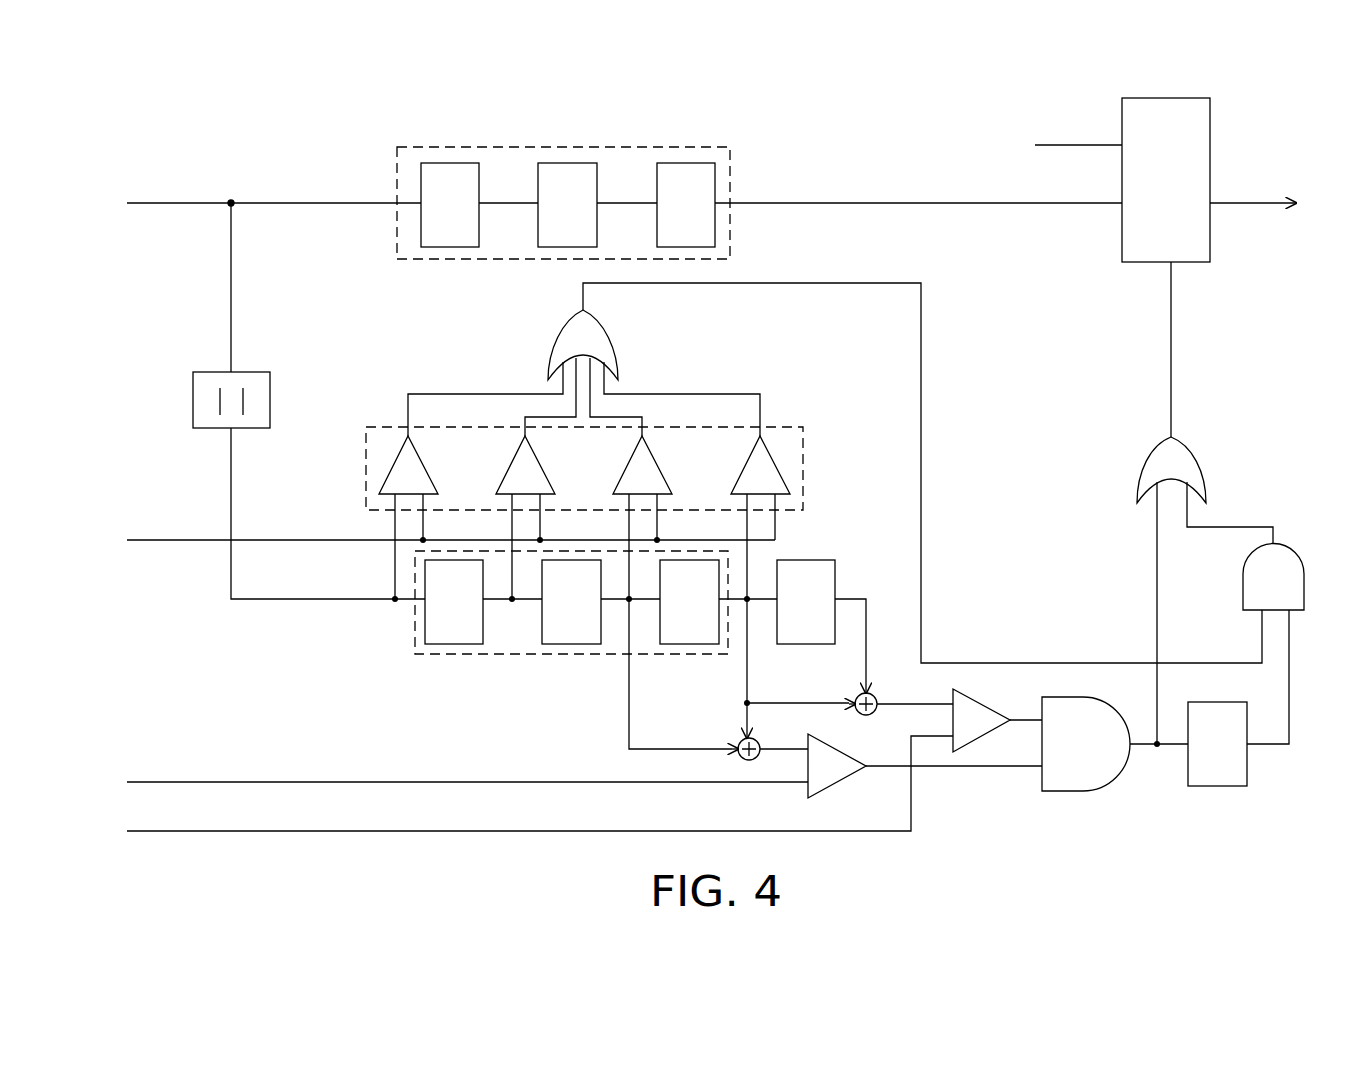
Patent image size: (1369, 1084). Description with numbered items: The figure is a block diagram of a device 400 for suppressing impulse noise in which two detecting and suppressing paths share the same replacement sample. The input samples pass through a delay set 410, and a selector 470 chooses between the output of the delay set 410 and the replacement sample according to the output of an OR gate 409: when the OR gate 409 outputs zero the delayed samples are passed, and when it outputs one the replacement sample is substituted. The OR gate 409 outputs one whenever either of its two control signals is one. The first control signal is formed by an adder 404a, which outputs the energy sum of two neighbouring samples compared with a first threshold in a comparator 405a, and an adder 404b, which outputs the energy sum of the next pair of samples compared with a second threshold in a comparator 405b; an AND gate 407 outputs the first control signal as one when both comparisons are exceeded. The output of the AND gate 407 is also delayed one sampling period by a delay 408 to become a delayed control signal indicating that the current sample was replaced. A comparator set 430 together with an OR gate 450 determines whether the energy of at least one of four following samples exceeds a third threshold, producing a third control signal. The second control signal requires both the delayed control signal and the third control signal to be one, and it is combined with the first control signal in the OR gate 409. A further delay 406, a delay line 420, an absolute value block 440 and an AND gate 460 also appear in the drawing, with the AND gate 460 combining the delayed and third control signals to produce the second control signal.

The device for suppressing impulse noise 400 is at (1322, 878).
The delay set 410 is at (730, 172).
The delay unit 420 is at (442, 654).
The comparator set 430 is at (795, 427).
The absolute value unit 440 is at (270, 381).
The OR gate 450 is at (612, 338).
The AND gate 460 is at (1304, 584).
The selector 470 is at (1210, 128).
The adder 404a is at (877, 698).
The adder 404b is at (738, 741).
The comparator 405a is at (982, 697).
The comparator 405b is at (836, 784).
The delay unit 406 is at (808, 560).
The AND gate 407 is at (1070, 791).
The delay 408 is at (1215, 786).
The OR gate 409 is at (1185, 448).